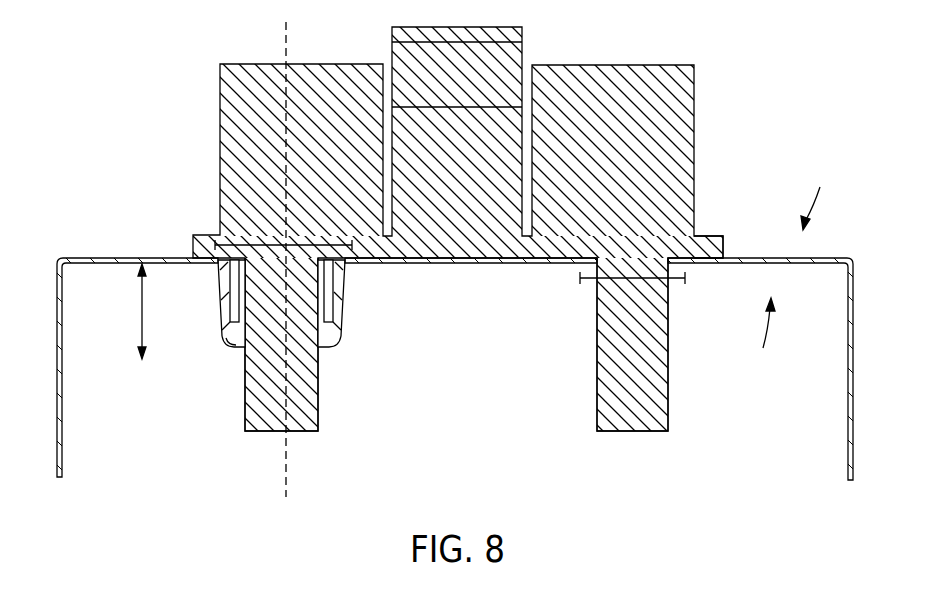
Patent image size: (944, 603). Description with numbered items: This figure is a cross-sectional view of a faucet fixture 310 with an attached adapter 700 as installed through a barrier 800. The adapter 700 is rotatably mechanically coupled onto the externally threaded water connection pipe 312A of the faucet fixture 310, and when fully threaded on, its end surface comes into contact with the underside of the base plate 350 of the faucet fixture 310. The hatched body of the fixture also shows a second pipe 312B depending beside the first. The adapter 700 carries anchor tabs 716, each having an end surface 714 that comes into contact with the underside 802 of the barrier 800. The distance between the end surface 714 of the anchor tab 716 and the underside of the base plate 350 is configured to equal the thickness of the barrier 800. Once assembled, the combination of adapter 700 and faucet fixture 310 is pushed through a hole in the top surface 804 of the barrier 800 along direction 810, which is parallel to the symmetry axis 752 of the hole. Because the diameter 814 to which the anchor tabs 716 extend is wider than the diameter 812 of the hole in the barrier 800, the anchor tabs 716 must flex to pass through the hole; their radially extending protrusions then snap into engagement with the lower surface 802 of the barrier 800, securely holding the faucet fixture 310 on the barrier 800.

The faucet fixture 310 is at (637, 72).
The externally threaded water connection pipe 312A is at (657, 401).
The second mounting leg 312B is at (262, 406).
The base plate 350 is at (702, 247).
The adapter 700 is at (295, 314).
The end surface of the anchor tab 714 is at (227, 261).
The anchor tab 716 is at (229, 338).
The symmetry axis 752 is at (284, 40).
The barrier 800 is at (847, 389).
The underside of the barrier 802 is at (760, 336).
The top surface of the barrier 804 is at (816, 195).
The direction 810 is at (142, 306).
The diameter of the hole in the barrier 812 is at (676, 282).
The diameter to which the anchor tabs extend 814 is at (230, 243).